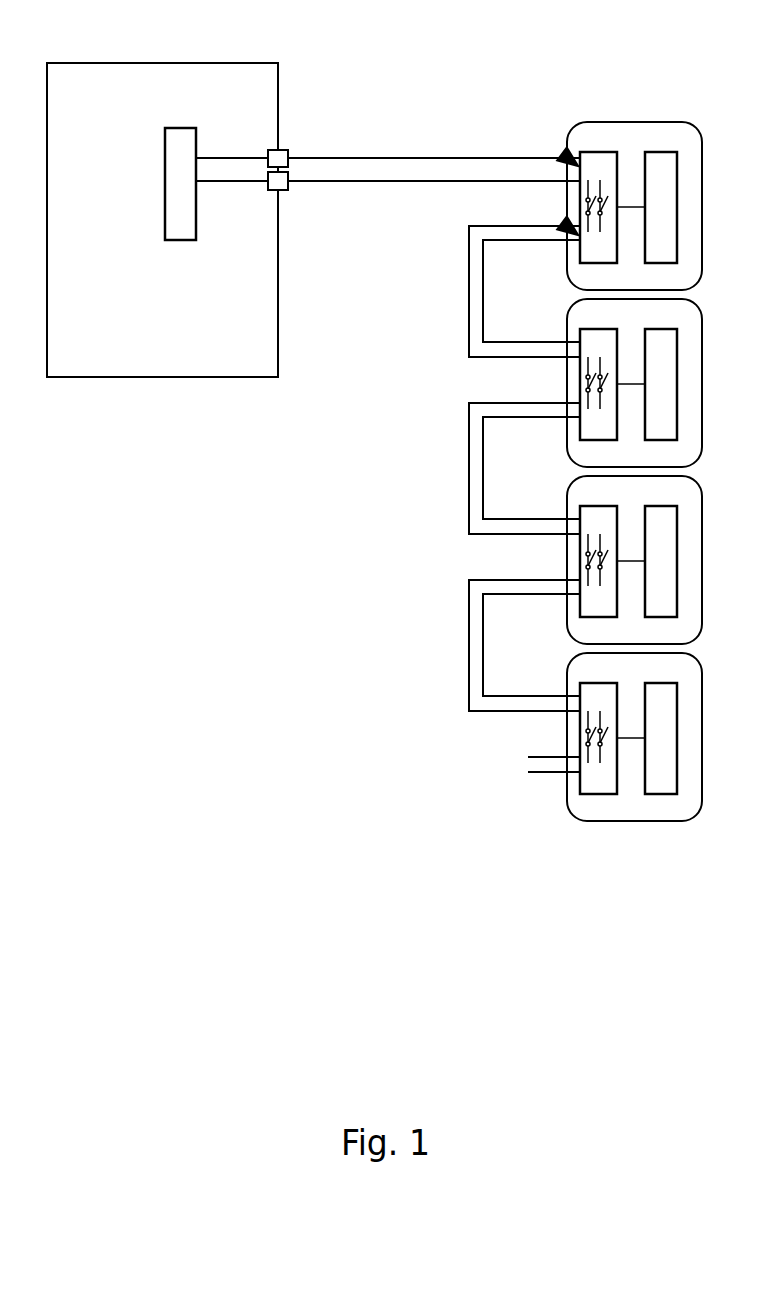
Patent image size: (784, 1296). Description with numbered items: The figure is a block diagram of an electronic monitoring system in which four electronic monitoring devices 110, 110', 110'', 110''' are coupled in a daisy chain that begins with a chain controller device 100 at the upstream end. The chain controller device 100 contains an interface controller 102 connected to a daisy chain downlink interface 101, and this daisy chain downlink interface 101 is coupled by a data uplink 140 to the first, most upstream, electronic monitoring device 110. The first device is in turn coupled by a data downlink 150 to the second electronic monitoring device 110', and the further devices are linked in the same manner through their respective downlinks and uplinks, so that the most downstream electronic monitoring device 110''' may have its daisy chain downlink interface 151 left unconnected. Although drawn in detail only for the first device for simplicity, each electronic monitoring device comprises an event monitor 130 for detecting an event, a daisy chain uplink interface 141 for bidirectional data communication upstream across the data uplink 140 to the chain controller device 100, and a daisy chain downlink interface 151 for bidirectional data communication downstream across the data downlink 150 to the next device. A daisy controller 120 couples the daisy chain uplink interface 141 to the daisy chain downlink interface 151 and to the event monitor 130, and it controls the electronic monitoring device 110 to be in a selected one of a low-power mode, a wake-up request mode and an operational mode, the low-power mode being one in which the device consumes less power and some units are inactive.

The chain controller device 100 is at (232, 378).
The daisy chain downlink interface 101 is at (278, 150).
The interface controller 102 is at (183, 128).
The electronic monitoring device 110 is at (602, 180).
The electronic monitoring device 110' is at (601, 398).
The electronic monitoring device 110'' is at (601, 572).
The electronic monitoring device 110''' is at (594, 751).
The daisy controller 120 is at (600, 150).
The event monitor 130 is at (667, 150).
The data uplink 140 is at (380, 182).
The daisy chain uplink interface 141 is at (563, 154).
The data downlink 150 is at (469, 345).
The daisy chain downlink interface 151 is at (563, 223).